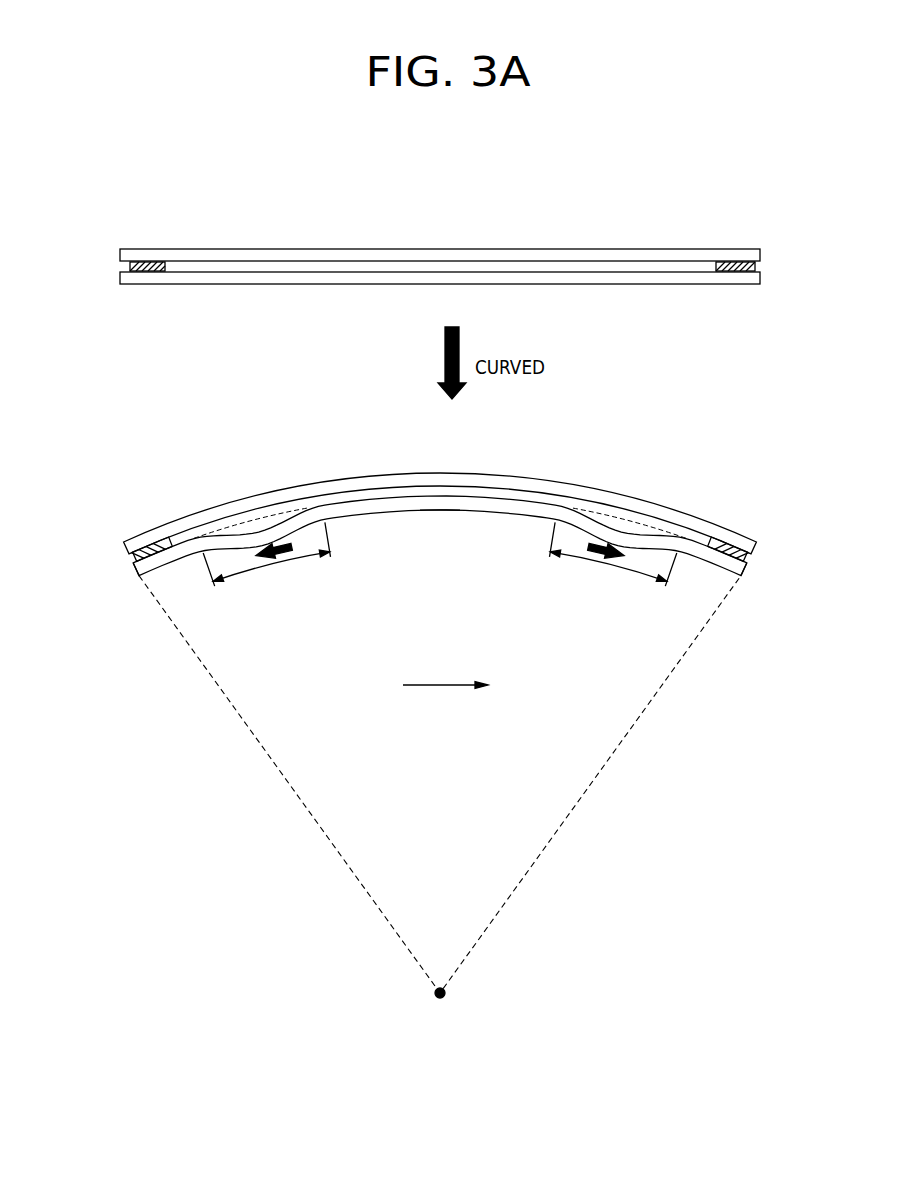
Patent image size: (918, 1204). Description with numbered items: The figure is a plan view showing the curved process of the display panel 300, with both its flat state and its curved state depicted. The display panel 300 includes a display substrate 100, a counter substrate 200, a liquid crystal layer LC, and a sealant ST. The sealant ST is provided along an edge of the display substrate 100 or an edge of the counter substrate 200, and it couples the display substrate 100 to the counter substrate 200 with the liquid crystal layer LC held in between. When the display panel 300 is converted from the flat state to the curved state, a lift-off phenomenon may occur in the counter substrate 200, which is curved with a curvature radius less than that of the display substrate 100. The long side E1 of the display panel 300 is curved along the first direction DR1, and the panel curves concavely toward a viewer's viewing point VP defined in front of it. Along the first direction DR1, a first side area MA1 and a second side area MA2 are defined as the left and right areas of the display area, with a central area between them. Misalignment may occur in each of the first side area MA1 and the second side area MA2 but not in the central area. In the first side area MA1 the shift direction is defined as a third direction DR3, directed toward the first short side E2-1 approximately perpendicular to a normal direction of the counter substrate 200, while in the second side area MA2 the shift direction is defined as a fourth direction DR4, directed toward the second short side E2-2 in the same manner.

The display panel 300 is at (750, 221).
The counter substrate 200 is at (746, 256).
The display substrate 100 is at (746, 278).
The liquid crystal layer LC is at (462, 266).
The sealant ST is at (128, 266).
The third direction DR3 is at (270, 546).
The fourth direction DR4 is at (606, 546).
The first side area MA1 is at (266, 557).
The second side area MA2 is at (613, 558).
The long side E1 is at (440, 512).
The first short side E2-1 is at (137, 574).
The second short side E2-2 is at (743, 574).
The first direction DR1 is at (445, 699).
The viewing point VP is at (440, 802).